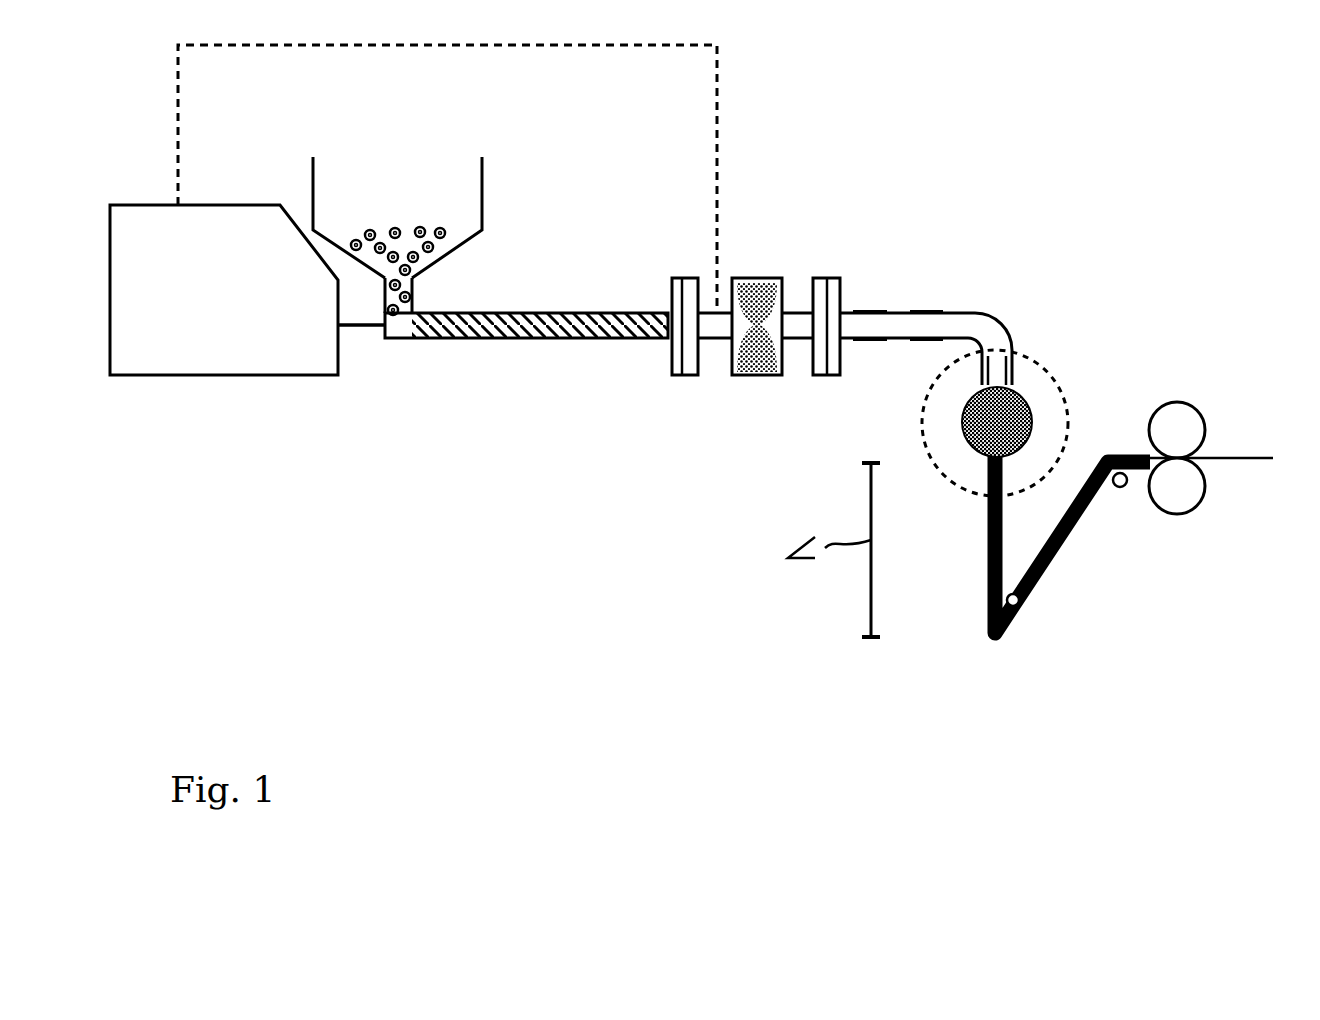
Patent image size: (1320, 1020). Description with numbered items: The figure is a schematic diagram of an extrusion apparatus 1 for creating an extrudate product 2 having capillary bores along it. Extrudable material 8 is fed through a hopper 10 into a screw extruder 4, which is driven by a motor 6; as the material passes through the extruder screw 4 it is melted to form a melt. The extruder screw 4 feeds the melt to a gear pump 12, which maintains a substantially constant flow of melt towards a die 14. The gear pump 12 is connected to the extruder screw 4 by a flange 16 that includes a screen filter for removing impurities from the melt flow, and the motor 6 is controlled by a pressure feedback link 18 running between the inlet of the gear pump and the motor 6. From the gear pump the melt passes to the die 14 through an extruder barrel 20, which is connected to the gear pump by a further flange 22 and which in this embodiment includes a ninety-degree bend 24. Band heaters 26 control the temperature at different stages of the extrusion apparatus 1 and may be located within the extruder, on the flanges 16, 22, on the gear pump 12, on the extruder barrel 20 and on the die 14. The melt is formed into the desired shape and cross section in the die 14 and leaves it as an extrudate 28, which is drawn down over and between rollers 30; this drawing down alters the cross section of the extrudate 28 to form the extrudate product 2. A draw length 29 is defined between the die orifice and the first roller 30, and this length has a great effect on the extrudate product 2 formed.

The extrusion apparatus 1 is at (258, 645).
The extrudate product 2 is at (1233, 458).
The screw extruder 4 is at (480, 340).
The motor 6 is at (230, 347).
The extrudable material 8 is at (415, 235).
The hopper 10 is at (482, 205).
The gear pump 12 is at (752, 375).
The die 14 is at (1030, 413).
The flange 16 is at (680, 375).
The pressure feedback link 18 is at (542, 45).
The extruder barrel 20 is at (897, 313).
The flange 22 is at (827, 278).
The 90° bend 24 is at (1000, 330).
The band heaters 26 is at (503, 340).
The extrudate 28 is at (985, 550).
The draw length 29 is at (871, 575).
The rollers 30 is at (1188, 478).